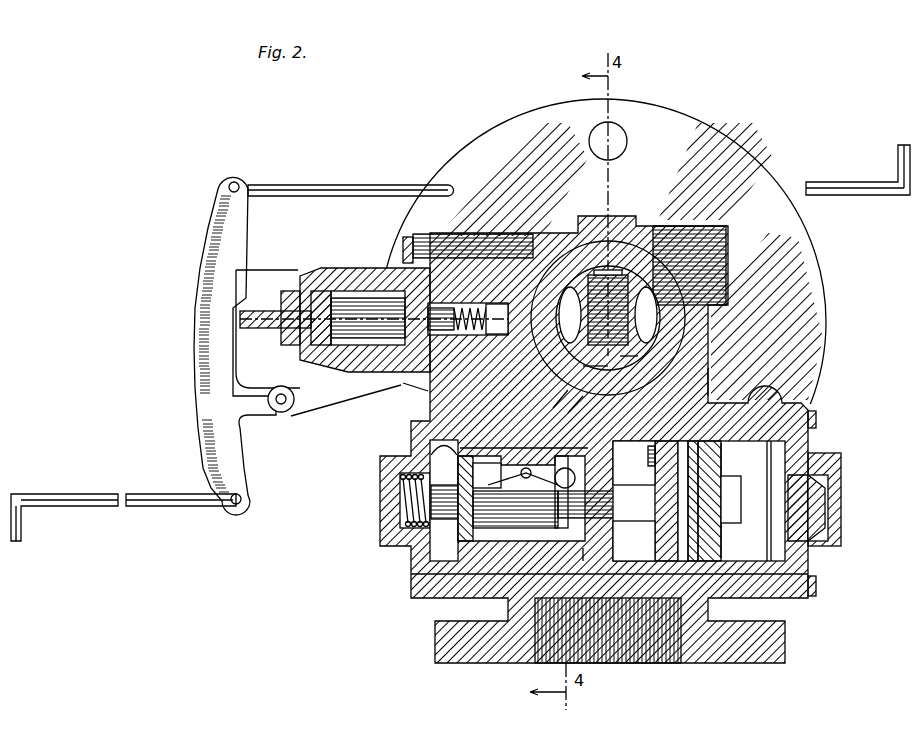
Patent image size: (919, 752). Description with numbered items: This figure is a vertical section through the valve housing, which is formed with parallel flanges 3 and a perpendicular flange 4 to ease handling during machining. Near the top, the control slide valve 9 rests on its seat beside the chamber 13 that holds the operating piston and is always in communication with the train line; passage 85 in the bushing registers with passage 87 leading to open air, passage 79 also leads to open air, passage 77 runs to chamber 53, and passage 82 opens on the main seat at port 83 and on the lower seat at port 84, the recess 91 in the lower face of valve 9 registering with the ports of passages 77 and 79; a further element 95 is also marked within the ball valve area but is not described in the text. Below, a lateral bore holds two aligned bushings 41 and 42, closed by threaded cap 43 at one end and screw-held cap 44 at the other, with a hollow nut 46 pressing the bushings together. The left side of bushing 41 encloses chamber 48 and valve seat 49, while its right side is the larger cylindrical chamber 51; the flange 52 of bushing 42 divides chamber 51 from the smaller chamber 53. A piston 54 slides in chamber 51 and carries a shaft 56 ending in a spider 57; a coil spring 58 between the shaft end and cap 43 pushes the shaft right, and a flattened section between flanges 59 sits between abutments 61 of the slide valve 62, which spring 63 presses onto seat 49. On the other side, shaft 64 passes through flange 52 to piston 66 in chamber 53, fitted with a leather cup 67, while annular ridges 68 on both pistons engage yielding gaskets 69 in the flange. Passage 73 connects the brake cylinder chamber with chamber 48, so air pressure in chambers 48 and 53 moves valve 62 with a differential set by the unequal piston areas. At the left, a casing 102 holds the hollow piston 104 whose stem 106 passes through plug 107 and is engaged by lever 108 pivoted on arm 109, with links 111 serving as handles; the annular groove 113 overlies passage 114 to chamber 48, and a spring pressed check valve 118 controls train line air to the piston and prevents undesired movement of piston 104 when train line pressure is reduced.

The parallel flanges 3 is at (690, 146).
The flange 4 is at (782, 637).
The control slide valve 9 is at (584, 354).
The chamber 13 is at (592, 307).
The bushing 41 is at (408, 428).
The bushing 42 is at (768, 540).
The threaded cap 43 is at (380, 505).
The cap 44 is at (833, 518).
The hollow nut 46 is at (805, 554).
The chamber 48 is at (521, 513).
The valve seat 49 is at (444, 500).
The cylindrical chamber 51 is at (578, 558).
The flange 52 is at (648, 466).
The cylindrical chamber 53 is at (766, 492).
The piston 54 is at (670, 502).
The shaft 56 is at (569, 499).
The spider 57 is at (450, 517).
The coil spring 58 is at (394, 478).
The flanges 59 is at (478, 500).
The abutments 61 is at (526, 511).
The slide valve 62 is at (487, 475).
The spring 63 is at (523, 488).
The shaft 64 is at (634, 541).
The piston 66 is at (716, 452).
The spring expanded leather cup 67 is at (718, 548).
The annular ridges 68 is at (634, 462).
The yielding gaskets 69 is at (641, 458).
The passage 73 is at (566, 478).
The passage 77 is at (766, 501).
The passage 79 is at (706, 378).
The passage 82 is at (555, 412).
The port 83 is at (596, 315).
The port 84 is at (524, 442).
The passage 85 is at (700, 325).
The passage 87 is at (720, 243).
The recess 91 is at (639, 358).
The port 95 is at (588, 368).
The casing 102 is at (360, 264).
The piston 104 is at (312, 268).
The stem 106 is at (246, 301).
The plug 107 is at (277, 330).
The lever 108 is at (224, 208).
The arm 109 is at (318, 404).
The links 111 is at (322, 178).
The annular groove 113 is at (428, 272).
The passage 114 is at (408, 400).
The spring pressed check valve 118 is at (454, 315).